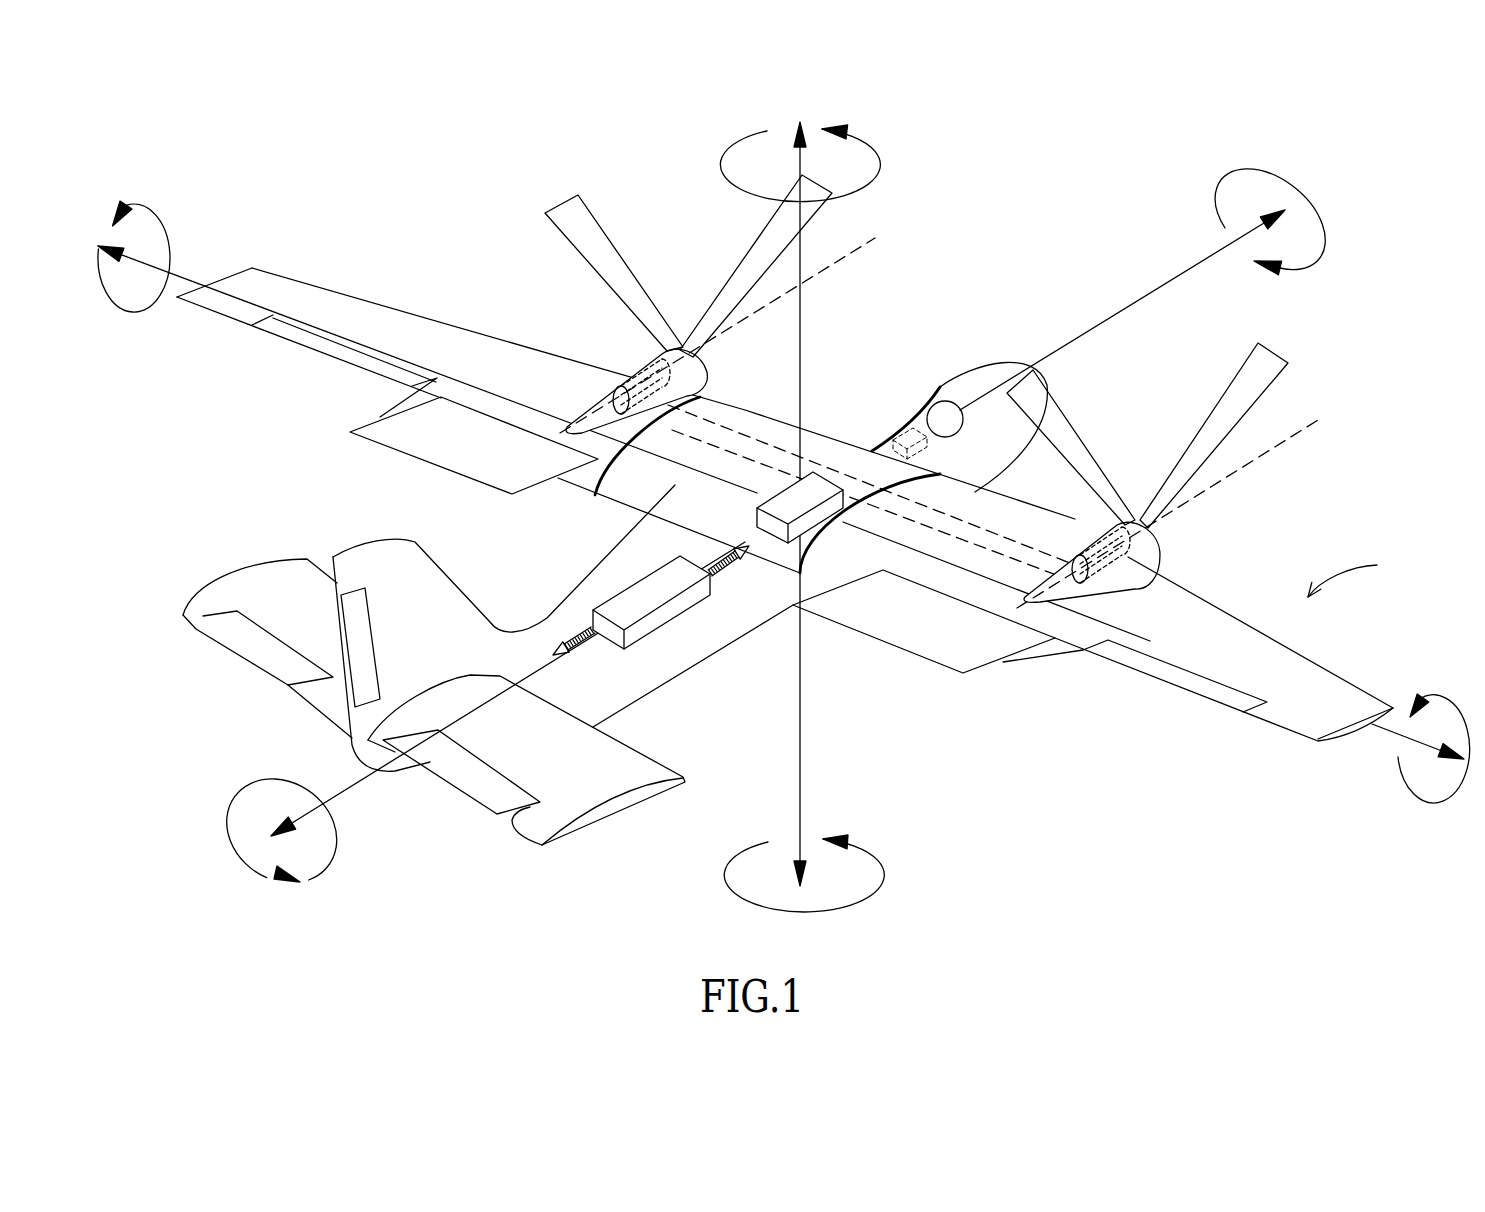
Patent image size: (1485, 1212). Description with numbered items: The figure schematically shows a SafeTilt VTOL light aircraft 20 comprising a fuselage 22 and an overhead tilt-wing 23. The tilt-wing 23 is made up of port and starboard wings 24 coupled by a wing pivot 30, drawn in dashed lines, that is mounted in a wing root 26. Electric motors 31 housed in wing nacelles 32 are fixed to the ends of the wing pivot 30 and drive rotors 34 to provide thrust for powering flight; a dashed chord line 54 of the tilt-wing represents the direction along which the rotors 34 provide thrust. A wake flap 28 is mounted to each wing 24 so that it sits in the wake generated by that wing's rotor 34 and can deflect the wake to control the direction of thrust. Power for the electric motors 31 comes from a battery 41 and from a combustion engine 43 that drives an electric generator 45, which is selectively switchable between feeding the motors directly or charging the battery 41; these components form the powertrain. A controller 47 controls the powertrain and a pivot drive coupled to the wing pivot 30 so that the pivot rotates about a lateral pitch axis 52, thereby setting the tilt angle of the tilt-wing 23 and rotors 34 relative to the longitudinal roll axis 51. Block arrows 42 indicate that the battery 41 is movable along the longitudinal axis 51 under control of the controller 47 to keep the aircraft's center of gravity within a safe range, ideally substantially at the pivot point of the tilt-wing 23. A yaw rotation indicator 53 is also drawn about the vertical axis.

The SafeTilt VTOL light aircraft 20 is at (784, 517).
The fuselage 22 is at (726, 627).
The overhead tilt-wing 23 is at (1362, 573).
The port and starboard wings 24 is at (423, 359).
The wing root 26 is at (720, 479).
The wake flap 28 is at (447, 453).
The wing pivot 30 is at (718, 413).
The electric motors 31 is at (634, 364).
The wing nacelles 32 is at (583, 396).
The rotors 34 is at (563, 223).
The battery 41 is at (670, 609).
The block arrows 42 is at (560, 647).
The combustion engine 43 is at (903, 425).
The electric generator 45 is at (945, 401).
The controller 47 is at (757, 508).
The longitudinal roll axis 51 is at (1170, 282).
The lateral pitch axis 52 is at (187, 273).
The yaw axis 53 is at (872, 189).
The chord line 54 is at (1293, 437).